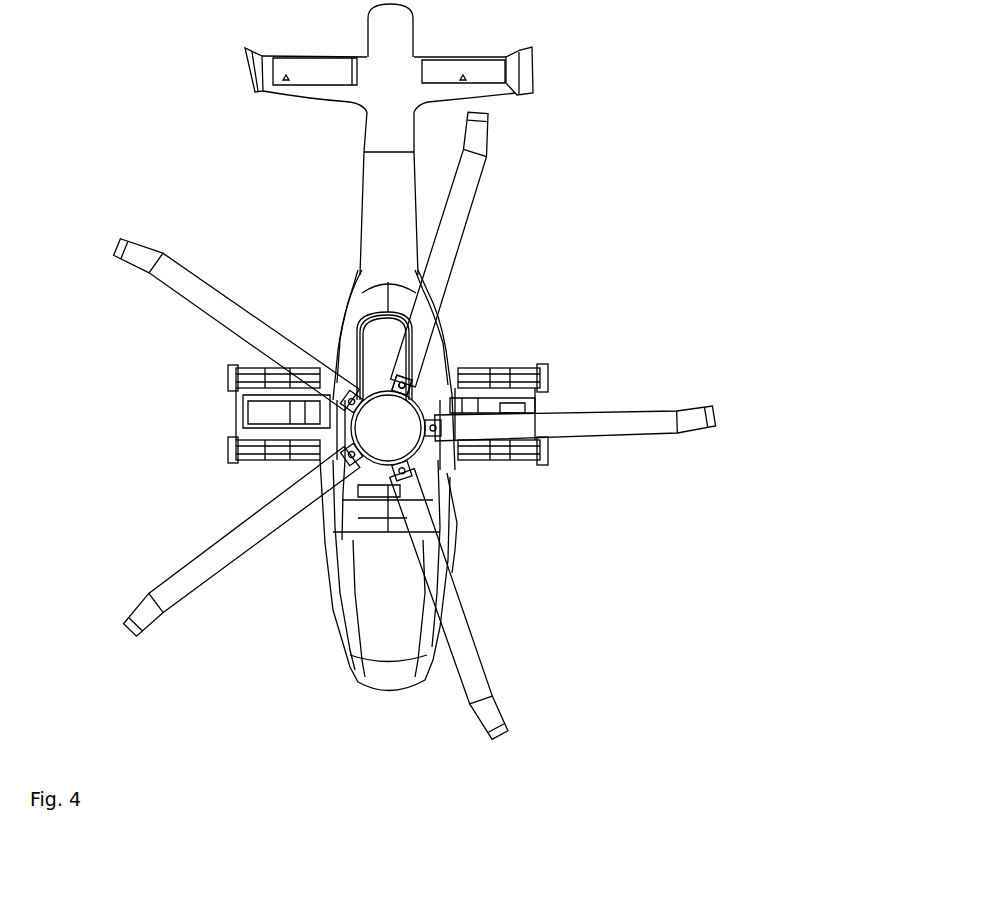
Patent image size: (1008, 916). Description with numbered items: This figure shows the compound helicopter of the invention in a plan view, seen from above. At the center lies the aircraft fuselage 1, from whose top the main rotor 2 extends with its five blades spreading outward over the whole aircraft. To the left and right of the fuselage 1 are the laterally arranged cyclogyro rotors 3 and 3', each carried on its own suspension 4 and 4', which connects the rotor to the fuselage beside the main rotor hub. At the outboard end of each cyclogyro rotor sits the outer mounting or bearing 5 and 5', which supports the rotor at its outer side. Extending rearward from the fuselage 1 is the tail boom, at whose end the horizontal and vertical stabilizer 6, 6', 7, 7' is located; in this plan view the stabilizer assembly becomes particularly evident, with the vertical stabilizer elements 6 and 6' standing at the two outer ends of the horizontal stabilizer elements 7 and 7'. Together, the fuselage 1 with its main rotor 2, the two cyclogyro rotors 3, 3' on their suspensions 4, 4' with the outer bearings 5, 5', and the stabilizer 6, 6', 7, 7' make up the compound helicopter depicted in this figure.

The aircraft fuselage 1 is at (447, 507).
The main rotor 2 is at (667, 427).
The cyclogyro rotor 3 is at (582, 530).
The cyclogyro rotor 3' is at (210, 498).
The suspension 4 is at (533, 353).
The suspension 4' is at (223, 367).
The outer mounting or bearing 5 is at (578, 373).
The outer mounting or bearing 5' is at (199, 409).
The vertical stabilizer 6 is at (603, 90).
The vertical stabilizer 6' is at (185, 97).
The horizontal stabilizer 7 is at (535, 155).
The horizontal stabilizer 7' is at (270, 121).